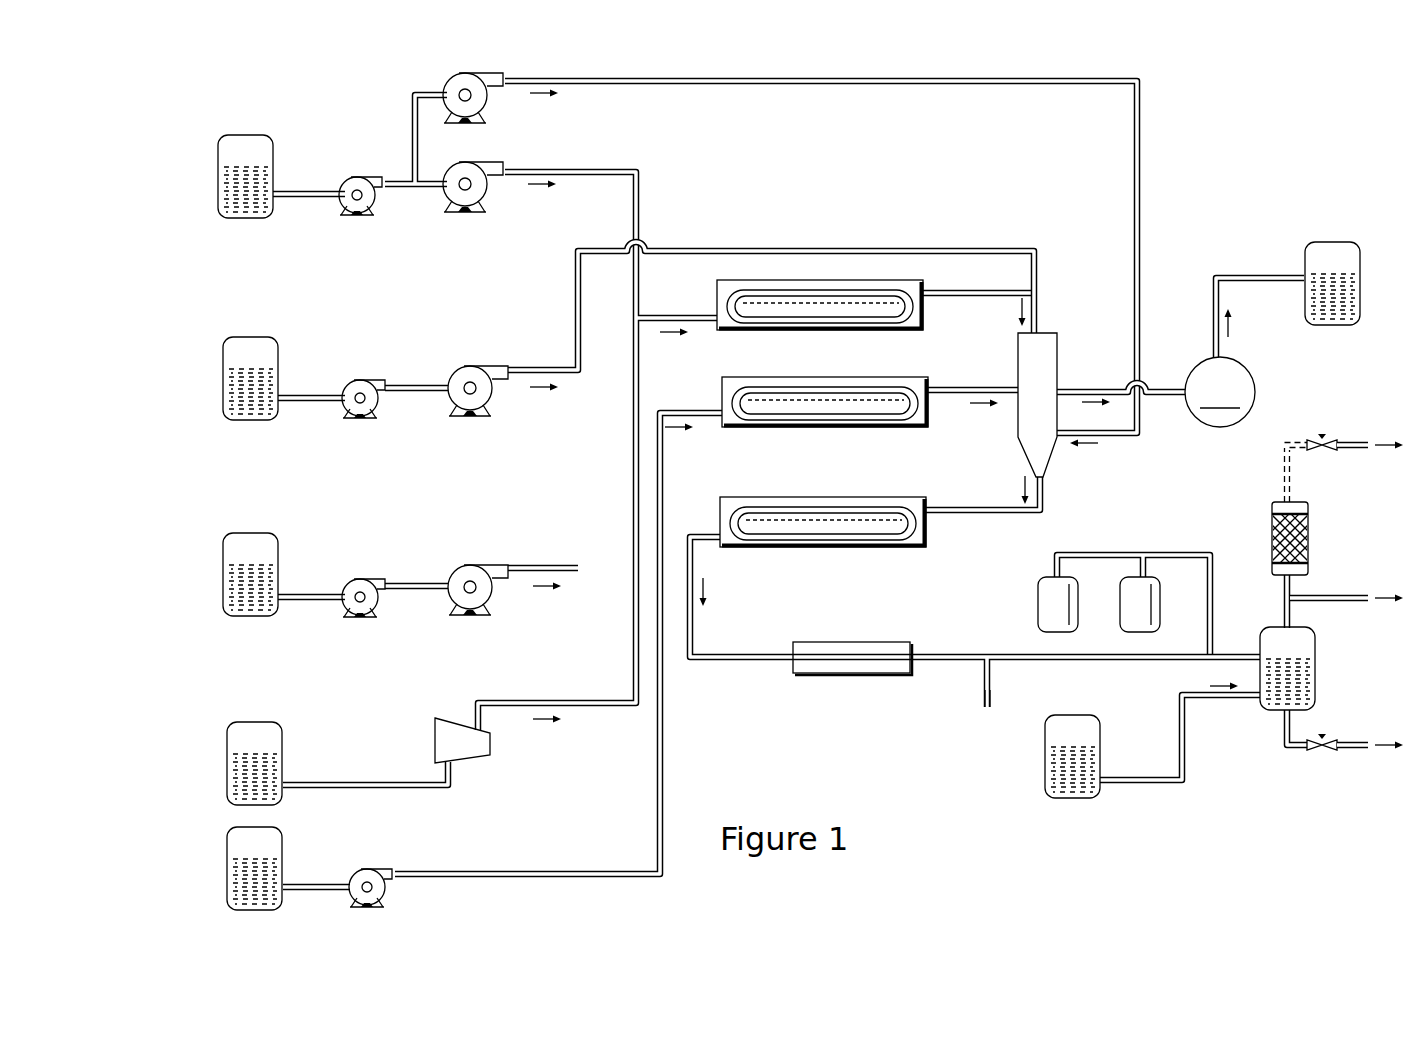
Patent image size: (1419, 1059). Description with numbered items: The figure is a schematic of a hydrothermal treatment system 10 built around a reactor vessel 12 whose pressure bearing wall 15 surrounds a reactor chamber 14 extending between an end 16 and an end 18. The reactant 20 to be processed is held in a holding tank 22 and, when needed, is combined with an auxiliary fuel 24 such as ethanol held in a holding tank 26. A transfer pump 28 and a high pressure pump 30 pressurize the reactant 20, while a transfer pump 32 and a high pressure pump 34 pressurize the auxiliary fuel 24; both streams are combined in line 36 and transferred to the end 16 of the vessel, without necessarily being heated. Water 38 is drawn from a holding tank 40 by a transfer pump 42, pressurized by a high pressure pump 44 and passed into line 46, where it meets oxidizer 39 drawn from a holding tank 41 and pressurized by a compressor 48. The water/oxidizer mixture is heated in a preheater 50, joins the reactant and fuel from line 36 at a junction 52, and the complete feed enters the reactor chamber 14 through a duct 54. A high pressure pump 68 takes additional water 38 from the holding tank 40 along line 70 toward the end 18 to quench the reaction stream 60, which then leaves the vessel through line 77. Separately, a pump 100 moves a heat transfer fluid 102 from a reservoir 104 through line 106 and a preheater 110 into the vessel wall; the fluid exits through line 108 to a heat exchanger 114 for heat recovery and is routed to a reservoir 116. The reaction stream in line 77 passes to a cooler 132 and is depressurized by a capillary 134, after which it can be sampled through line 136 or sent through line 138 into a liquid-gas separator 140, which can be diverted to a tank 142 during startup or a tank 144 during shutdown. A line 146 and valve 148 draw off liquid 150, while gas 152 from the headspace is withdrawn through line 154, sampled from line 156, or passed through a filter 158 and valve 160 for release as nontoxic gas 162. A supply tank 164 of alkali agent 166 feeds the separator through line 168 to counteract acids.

The hydrothermal treatment system 10 is at (1254, 163).
The reactor vessel 12 is at (1018, 366).
The reactor chamber 14 is at (1042, 366).
The pressure bearing wall 15 is at (1068, 376).
The end 16 is at (1020, 335).
The end 18 is at (1022, 452).
The reactant 20 is at (238, 615).
The holding tank 22 is at (223, 552).
The auxiliary fuel 24 is at (236, 419).
The holding tank 26 is at (223, 355).
The transfer pump 28 is at (358, 579).
The high pressure pump 30 is at (480, 563).
The transfer pump 32 is at (358, 380).
The high pressure pump 34 is at (480, 366).
The line 36 is at (576, 276).
The water 38 is at (229, 213).
The oxidizer 39 is at (228, 775).
The holding tank 40 is at (218, 152).
The holding tank 41 is at (228, 748).
The transfer pump 42 is at (355, 177).
The high pressure pump 44 is at (470, 163).
The line 46 is at (640, 400).
The compressor 48 is at (435, 733).
The preheater 50 is at (806, 331).
The junction 52 is at (1037, 288).
The duct 54 is at (1040, 312).
The reaction stream 60 is at (1047, 452).
The high pressure pump 68 is at (480, 72).
The line 70 is at (1140, 262).
The line 77 is at (968, 513).
The pump 100 is at (363, 869).
The heat transfer fluid 102 is at (243, 903).
The reservoir 104 is at (228, 850).
The line 106 is at (664, 732).
The line 108 is at (1162, 386).
The preheater 110 is at (810, 428).
The heat exchanger 114 is at (1220, 368).
The reservoir 116 is at (1305, 263).
The cooler 132 is at (795, 497).
The capillary 134 is at (845, 642).
The line 136 is at (983, 692).
The line 138 is at (1013, 657).
The liquid-gas separator 140 is at (1316, 670).
The tank 142 is at (1152, 606).
The tank 144 is at (1039, 602).
The line 146 is at (1283, 724).
The valve 148 is at (1316, 753).
The liquid 150 is at (1350, 753).
The gas 152 is at (1316, 642).
The line 154 is at (1285, 614).
The line 156 is at (1345, 595).
The filter 158 is at (1271, 523).
The valve 160 is at (1326, 436).
The nontoxic gas 162 is at (1352, 452).
The supply tank 164 is at (1045, 735).
The alkali agent 166 is at (1092, 796).
The line 168 is at (1186, 757).